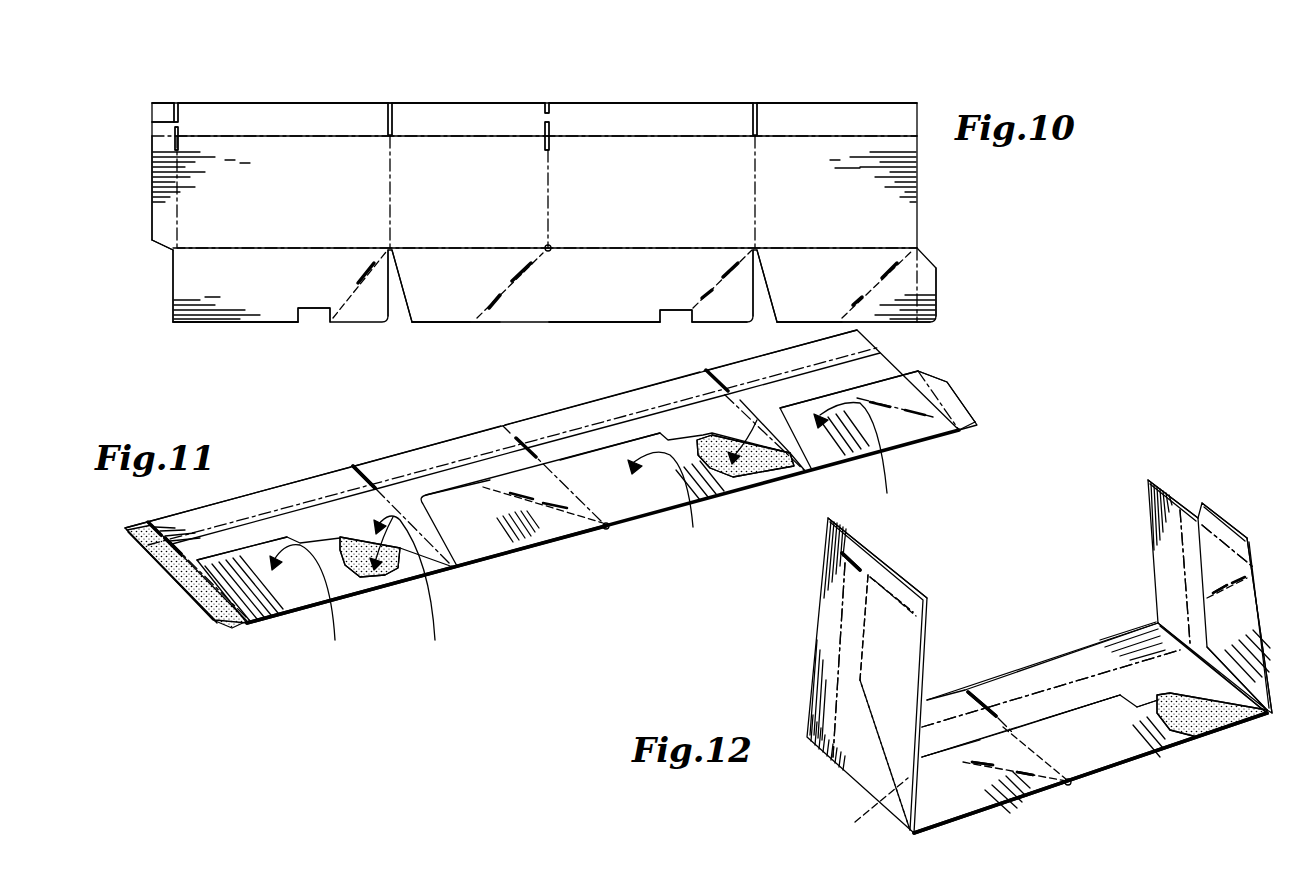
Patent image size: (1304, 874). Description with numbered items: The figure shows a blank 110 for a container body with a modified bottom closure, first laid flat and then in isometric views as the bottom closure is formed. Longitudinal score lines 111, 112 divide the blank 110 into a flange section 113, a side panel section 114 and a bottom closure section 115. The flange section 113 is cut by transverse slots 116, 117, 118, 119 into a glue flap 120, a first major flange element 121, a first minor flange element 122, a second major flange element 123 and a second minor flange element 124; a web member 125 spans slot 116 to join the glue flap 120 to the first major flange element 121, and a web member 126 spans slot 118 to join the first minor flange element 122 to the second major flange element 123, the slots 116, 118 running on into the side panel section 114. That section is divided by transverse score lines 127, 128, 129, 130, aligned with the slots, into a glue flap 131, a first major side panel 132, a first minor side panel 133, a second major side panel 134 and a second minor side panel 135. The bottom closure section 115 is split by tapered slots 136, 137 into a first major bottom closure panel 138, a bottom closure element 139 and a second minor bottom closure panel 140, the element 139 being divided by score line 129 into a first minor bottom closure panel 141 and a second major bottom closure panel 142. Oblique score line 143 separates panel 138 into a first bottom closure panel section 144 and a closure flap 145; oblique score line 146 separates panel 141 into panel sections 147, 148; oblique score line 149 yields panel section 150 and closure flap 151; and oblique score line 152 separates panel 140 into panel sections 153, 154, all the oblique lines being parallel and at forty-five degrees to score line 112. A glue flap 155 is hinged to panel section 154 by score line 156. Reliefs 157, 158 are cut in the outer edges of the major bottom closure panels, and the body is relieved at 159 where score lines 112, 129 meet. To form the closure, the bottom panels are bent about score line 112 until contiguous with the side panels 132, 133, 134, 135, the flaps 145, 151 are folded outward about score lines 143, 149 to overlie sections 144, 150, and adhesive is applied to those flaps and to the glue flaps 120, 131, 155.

In FIG. 10, the blank 110 is at (522, 336).
In FIG. 10, the longitudinal score line 111 is at (268, 142).
In FIG. 11, the longitudinal score line 111 is at (226, 520).
In FIG. 12, the longitudinal score line 111 is at (1044, 690).
In FIG. 10, the longitudinal score line 112 is at (280, 245).
In FIG. 11, the longitudinal score line 112 is at (496, 556).
In FIG. 12, the longitudinal score line 112 is at (925, 640).
In FIG. 10, the flange section 113 is at (148, 122).
In FIG. 10, the side panel section 114 is at (145, 205).
In FIG. 10, the bottom closure section 115 is at (160, 292).
In FIG. 10, the transverse slot 116 is at (186, 122).
In FIG. 10, the transverse slot 117 is at (390, 101).
In FIG. 11, the transverse slot 117 is at (358, 462).
In FIG. 10, the transverse slot 118 is at (552, 144).
In FIG. 10, the transverse slot 119 is at (755, 101).
In FIG. 10, the glue flap 120 is at (172, 138).
In FIG. 11, the glue flap 120 is at (840, 522).
In FIG. 12, the glue flap 120 is at (846, 524).
In FIG. 10, the first major flange element 121 is at (292, 128).
In FIG. 11, the first major flange element 121 is at (268, 490).
In FIG. 12, the first major flange element 121 is at (822, 630).
In FIG. 10, the first minor flange element 122 is at (470, 128).
In FIG. 11, the first minor flange element 122 is at (412, 450).
In FIG. 12, the first minor flange element 122 is at (947, 690).
In FIG. 10, the second major flange element 123 is at (666, 128).
In FIG. 11, the second major flange element 123 is at (568, 412).
In FIG. 12, the second major flange element 123 is at (1066, 660).
In FIG. 10, the second minor flange element 124 is at (848, 128).
In FIG. 11, the second minor flange element 124 is at (710, 366).
In FIG. 12, the second minor flange element 124 is at (1160, 545).
In FIG. 10, the web member 125 is at (152, 104).
In FIG. 10, the web member 126 is at (547, 113).
In FIG. 10, the transverse score line 127 is at (180, 190).
In FIG. 11, the transverse score line 127 is at (211, 583).
In FIG. 12, the transverse score line 127 is at (850, 783).
In FIG. 10, the transverse score line 128 is at (389, 190).
In FIG. 11, the transverse score line 128 is at (414, 528).
In FIG. 10, the transverse score line 129 is at (549, 193).
In FIG. 11, the transverse score line 129 is at (566, 487).
In FIG. 12, the transverse score line 129 is at (1005, 720).
In FIG. 10, the transverse score line 130 is at (754, 192).
In FIG. 11, the transverse score line 130 is at (765, 433).
In FIG. 12, the transverse score line 130 is at (1185, 657).
In FIG. 10, the glue flap 131 is at (150, 236).
In FIG. 12, the glue flap 131 is at (890, 570).
In FIG. 10, the first major side panel 132 is at (301, 200).
In FIG. 11, the first major side panel 132 is at (345, 522).
In FIG. 12, the first major side panel 132 is at (911, 644).
In FIG. 10, the first minor side panel 133 is at (478, 200).
In FIG. 11, the first minor side panel 133 is at (485, 479).
In FIG. 12, the first minor side panel 133 is at (971, 740).
In FIG. 10, the second major side panel 134 is at (667, 200).
In FIG. 11, the second major side panel 134 is at (615, 442).
In FIG. 12, the second major side panel 134 is at (1160, 682).
In FIG. 10, the second minor side panel 135 is at (853, 200).
In FIG. 11, the second minor side panel 135 is at (813, 392).
In FIG. 12, the second minor side panel 135 is at (1188, 500).
In FIG. 10, the tapered slot 136 is at (396, 330).
In FIG. 10, the tapered slot 137 is at (764, 304).
In FIG. 10, the first major bottom closure panel 138 is at (240, 330).
In FIG. 10, the bottom closure element 139 is at (622, 330).
In FIG. 10, the second minor bottom closure panel 140 is at (905, 328).
In FIG. 10, the first minor bottom closure panel 141 is at (492, 330).
In FIG. 10, the second major bottom closure panel 142 is at (696, 338).
In FIG. 10, the oblique score line 143 is at (350, 278).
In FIG. 11, the oblique score line 143 is at (440, 570).
In FIG. 10, the first bottom closure panel section 144 is at (233, 288).
In FIG. 11, the first bottom closure panel section 144 is at (283, 586).
In FIG. 10, the closure flap 145 is at (381, 309).
In FIG. 11, the closure flap 145 is at (378, 578).
In FIG. 12, the closure flap 145 is at (877, 793).
In FIG. 10, the oblique score line 146 is at (490, 298).
In FIG. 11, the oblique score line 146 is at (540, 535).
In FIG. 10, the first bottom closure panel section 147 is at (457, 276).
In FIG. 11, the first bottom closure panel section 147 is at (488, 544).
In FIG. 12, the first bottom closure panel section 147 is at (973, 794).
In FIG. 10, the second bottom closure panel section 148 is at (538, 312).
In FIG. 11, the second bottom closure panel section 148 is at (555, 489).
In FIG. 12, the second bottom closure panel section 148 is at (1018, 761).
In FIG. 10, the oblique score line 149 is at (715, 282).
In FIG. 11, the oblique score line 149 is at (798, 475).
In FIG. 12, the oblique score line 149 is at (1260, 716).
In FIG. 10, the first bottom closure panel section 150 is at (608, 282).
In FIG. 11, the first bottom closure panel section 150 is at (653, 494).
In FIG. 12, the first bottom closure panel section 150 is at (1118, 734).
In FIG. 10, the closure flap 151 is at (741, 311).
In FIG. 11, the closure flap 151 is at (752, 480).
In FIG. 12, the closure flap 151 is at (1232, 728).
In FIG. 10, the oblique score line 152 is at (860, 296).
In FIG. 11, the oblique score line 152 is at (942, 396).
In FIG. 12, the oblique score line 152 is at (1242, 582).
In FIG. 10, the first bottom closure panel section 153 is at (828, 276).
In FIG. 11, the first bottom closure panel section 153 is at (848, 444).
In FIG. 12, the first bottom closure panel section 153 is at (1251, 624).
In FIG. 10, the second bottom closure panel section 154 is at (905, 309).
In FIG. 11, the second bottom closure panel section 154 is at (935, 380).
In FIG. 12, the second bottom closure panel section 154 is at (1243, 569).
In FIG. 10, the glue flap 155 is at (930, 272).
In FIG. 11, the glue flap 155 is at (960, 428).
In FIG. 12, the glue flap 155 is at (1222, 530).
In FIG. 10, the score line 156 is at (928, 294).
In FIG. 11, the score line 156 is at (970, 422).
In FIG. 12, the score line 156 is at (1240, 545).
In FIG. 10, the relief 157 is at (312, 326).
In FIG. 10, the relief 158 is at (678, 324).
In FIG. 10, the relief 159 is at (551, 246).
In FIG. 11, the relief 159 is at (608, 530).